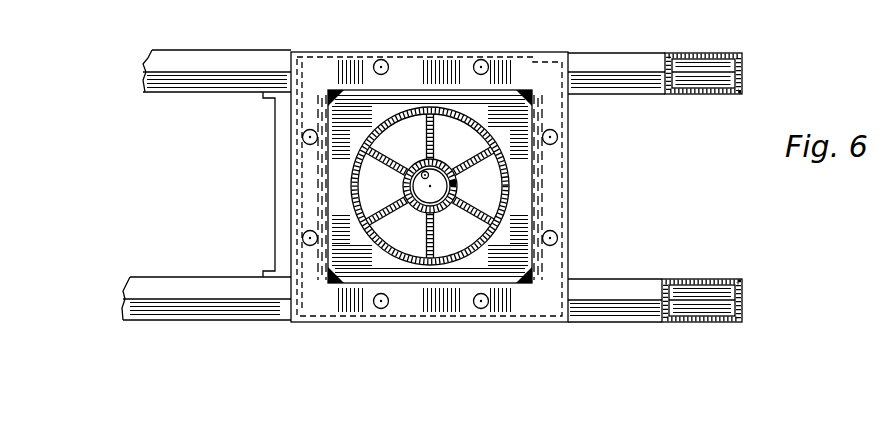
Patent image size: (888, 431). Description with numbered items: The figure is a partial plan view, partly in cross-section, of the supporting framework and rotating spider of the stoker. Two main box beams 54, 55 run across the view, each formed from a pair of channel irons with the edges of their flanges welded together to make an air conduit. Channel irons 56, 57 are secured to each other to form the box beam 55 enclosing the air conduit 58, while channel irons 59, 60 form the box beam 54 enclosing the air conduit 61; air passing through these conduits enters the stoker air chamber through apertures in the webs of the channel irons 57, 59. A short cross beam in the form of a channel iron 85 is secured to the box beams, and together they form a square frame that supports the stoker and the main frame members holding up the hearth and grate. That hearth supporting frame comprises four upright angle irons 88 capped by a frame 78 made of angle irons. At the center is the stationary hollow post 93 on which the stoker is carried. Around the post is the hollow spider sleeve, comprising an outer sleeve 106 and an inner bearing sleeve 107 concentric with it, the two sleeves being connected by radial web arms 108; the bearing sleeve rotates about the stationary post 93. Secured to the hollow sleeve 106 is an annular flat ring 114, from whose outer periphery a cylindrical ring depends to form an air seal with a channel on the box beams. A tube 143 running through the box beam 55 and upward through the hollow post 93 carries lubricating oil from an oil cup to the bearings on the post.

The box beam 54 is at (677, 297).
The box beam 55 is at (676, 67).
The channel iron 56 is at (628, 52).
The channel iron 57 is at (643, 86).
The air conduit 58 is at (710, 57).
The channel iron 59 is at (637, 283).
The channel iron 60 is at (622, 320).
The air conduit 61 is at (700, 290).
The frame 78 is at (404, 62).
The channel iron 85 is at (272, 159).
The upright angle irons 88 is at (313, 52).
The hollow post 93 is at (430, 175).
The outer sleeve 106 is at (508, 203).
The inner bearing sleeve 107 is at (458, 184).
The radial web arms 108 is at (477, 153).
The annular flat ring 114 is at (337, 197).
The tube 143 is at (404, 189).